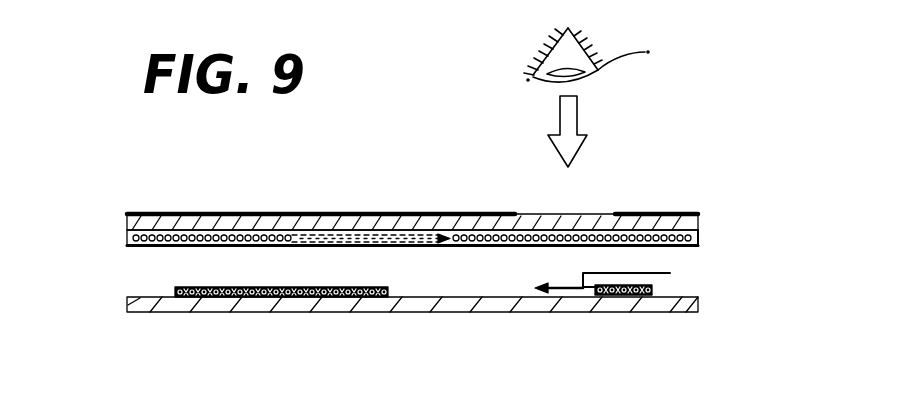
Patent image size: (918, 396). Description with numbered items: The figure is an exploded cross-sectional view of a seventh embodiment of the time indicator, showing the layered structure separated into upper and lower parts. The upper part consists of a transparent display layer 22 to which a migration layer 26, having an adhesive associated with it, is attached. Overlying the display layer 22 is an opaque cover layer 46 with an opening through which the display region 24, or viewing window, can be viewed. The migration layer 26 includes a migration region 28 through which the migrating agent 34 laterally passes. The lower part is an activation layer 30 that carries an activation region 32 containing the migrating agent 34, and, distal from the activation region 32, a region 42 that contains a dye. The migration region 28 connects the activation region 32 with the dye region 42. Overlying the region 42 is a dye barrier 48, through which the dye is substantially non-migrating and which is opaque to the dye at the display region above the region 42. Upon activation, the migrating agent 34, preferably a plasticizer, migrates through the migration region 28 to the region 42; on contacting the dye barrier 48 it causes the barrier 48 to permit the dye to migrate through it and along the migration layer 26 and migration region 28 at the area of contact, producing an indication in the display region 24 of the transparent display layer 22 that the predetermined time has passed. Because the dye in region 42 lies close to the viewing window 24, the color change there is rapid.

The display layer 22 is at (127, 226).
The display region 24 is at (555, 213).
The migration layer 26 is at (127, 238).
The migration region 28 is at (698, 240).
The activation layer 30 is at (640, 312).
The activation region 32 is at (187, 286).
The migrating agent 34 is at (278, 246).
The region containing a dye 42 is at (652, 289).
The opaque cover layer 46 is at (662, 213).
The dye barrier 48 is at (670, 273).